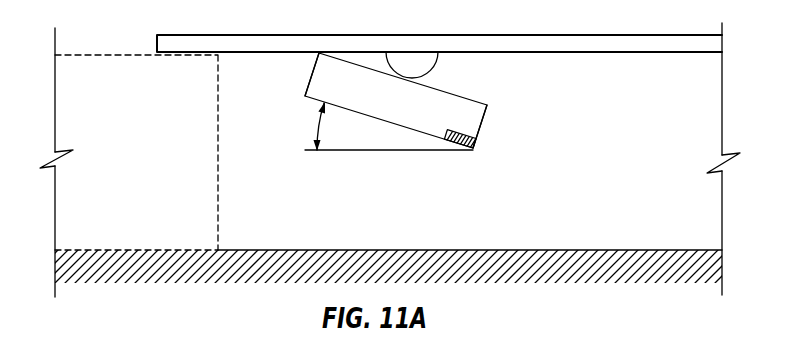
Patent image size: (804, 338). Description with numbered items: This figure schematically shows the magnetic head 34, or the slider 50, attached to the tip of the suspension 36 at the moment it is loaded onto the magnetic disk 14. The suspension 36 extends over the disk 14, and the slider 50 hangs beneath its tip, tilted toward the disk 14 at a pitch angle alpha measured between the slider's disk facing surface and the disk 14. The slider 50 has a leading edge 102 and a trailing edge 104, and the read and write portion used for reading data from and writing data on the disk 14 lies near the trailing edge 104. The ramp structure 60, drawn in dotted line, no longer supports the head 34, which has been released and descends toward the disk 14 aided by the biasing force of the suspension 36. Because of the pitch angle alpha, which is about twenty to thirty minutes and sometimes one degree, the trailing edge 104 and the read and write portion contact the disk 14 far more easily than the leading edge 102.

The suspension 36 is at (468, 33).
The slider 50 is at (338, 72).
The leading edge 102 is at (308, 85).
The trailing edge 104 is at (486, 112).
The magnetic head 34 is at (389, 167).
The ramp structure 60 is at (135, 167).
The magnetic disk 14 is at (388, 283).
The pitch angle alpha is at (306, 126).